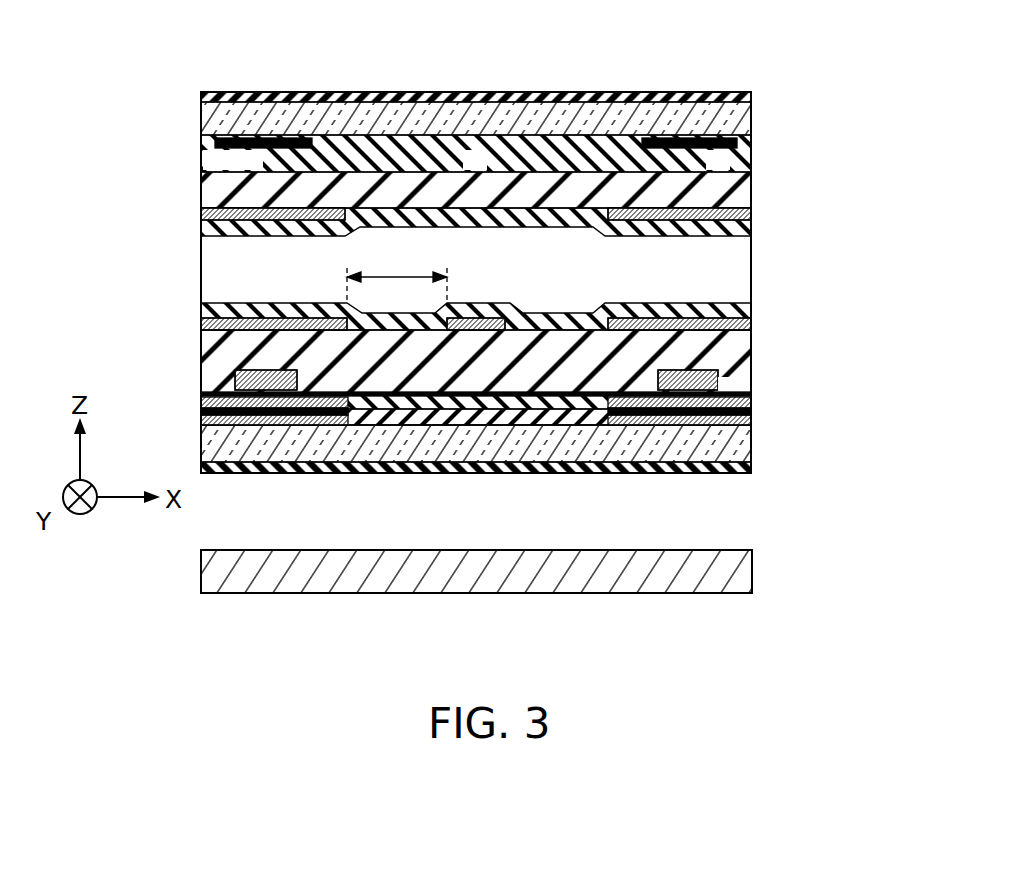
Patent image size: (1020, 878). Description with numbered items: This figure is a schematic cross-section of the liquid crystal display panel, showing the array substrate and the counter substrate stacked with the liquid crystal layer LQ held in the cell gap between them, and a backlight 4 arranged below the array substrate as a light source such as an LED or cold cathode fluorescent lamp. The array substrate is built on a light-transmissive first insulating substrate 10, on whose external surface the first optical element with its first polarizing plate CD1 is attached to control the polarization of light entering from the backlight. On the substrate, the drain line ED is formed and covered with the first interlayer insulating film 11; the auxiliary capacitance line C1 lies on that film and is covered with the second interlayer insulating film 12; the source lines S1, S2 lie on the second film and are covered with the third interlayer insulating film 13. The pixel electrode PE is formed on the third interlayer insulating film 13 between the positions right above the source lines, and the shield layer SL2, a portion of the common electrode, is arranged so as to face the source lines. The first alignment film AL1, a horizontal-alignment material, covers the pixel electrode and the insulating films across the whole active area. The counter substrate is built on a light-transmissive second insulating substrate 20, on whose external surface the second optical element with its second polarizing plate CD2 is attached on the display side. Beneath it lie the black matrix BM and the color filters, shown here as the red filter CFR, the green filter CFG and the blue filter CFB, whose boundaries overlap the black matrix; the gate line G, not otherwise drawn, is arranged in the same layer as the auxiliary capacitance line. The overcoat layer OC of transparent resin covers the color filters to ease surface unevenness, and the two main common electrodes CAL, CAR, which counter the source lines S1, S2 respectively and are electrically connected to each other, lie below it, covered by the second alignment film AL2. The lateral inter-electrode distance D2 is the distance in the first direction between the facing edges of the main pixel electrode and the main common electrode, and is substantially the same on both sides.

The second polarizer (PL2) CD2 is at (738, 92).
The second insulating substrate 20 is at (752, 118).
The green color filter CFG is at (400, 162).
The red color filter CFR is at (201, 159).
The gate line G is at (475, 161).
The blue color filter CFB is at (745, 158).
The black matrix BM is at (256, 140).
The overcoat layer OC is at (752, 186).
The second alignment film AL2 is at (740, 234).
The main common electrode CAL is at (201, 213).
The main common electrode CAR is at (752, 214).
The liquid crystal layer LQ is at (752, 282).
The lateral inter-electrode distance D2 is at (397, 275).
The first alignment film AL1 is at (232, 303).
The shield layer SL2 is at (201, 325).
The pixel electrode PE is at (496, 322).
The third interlayer insulating film 13 is at (553, 372).
The source line S1 is at (235, 379).
The source line S2 is at (718, 379).
The second interlayer insulating film 12 is at (497, 410).
The first interlayer insulating film 11 is at (432, 440).
The drain line ED is at (273, 405).
The auxiliary capacitance line C1 is at (345, 418).
The first insulating substrate 10 is at (752, 446).
The first polarizer (PL1) CD1 is at (745, 468).
The backlight 4 is at (753, 575).